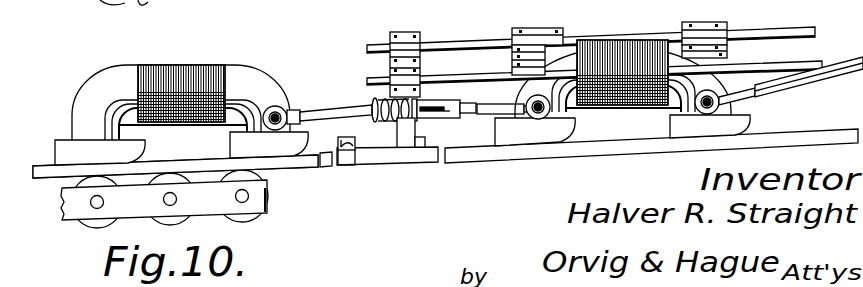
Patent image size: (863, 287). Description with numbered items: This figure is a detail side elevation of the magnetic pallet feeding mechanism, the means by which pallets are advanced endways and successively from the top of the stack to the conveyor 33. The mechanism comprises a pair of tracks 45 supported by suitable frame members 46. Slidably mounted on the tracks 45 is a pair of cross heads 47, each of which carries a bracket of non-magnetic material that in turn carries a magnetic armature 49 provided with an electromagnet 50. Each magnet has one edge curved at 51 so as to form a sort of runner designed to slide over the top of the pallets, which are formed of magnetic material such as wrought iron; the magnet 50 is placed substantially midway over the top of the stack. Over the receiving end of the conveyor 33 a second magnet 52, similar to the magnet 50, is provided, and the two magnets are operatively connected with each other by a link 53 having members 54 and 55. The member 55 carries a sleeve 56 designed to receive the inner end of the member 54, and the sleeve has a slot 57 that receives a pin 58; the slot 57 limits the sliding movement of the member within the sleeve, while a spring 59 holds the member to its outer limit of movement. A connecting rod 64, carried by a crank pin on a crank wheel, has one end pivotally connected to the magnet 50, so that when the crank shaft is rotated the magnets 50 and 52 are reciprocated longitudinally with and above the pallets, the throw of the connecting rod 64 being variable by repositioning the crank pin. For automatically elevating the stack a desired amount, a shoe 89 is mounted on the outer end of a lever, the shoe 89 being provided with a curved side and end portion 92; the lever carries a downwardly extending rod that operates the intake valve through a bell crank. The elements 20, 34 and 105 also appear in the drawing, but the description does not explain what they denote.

The base plate 20 is at (400, 167).
The conveyor 33 is at (257, 195).
The track bar 34 is at (164, 200).
The tracks 45 is at (490, 43).
The frame members 46 is at (738, 18).
The cross heads 47 is at (553, 28).
The magnetic armature 49 is at (710, 126).
The electromagnet 50 is at (614, 58).
The curved edge 51 is at (580, 122).
The second magnet 52 is at (188, 65).
The link 53 is at (397, 137).
The member 54 is at (320, 112).
The member 55 is at (487, 116).
The sleeve 56 is at (454, 106).
The slot 57 is at (442, 119).
The pin 58 is at (424, 104).
The spring 59 is at (378, 103).
The connecting rod 64 is at (792, 90).
The shoe 89 is at (344, 137).
The curved side and end portion 92 is at (353, 140).
The stop block 105 is at (327, 168).